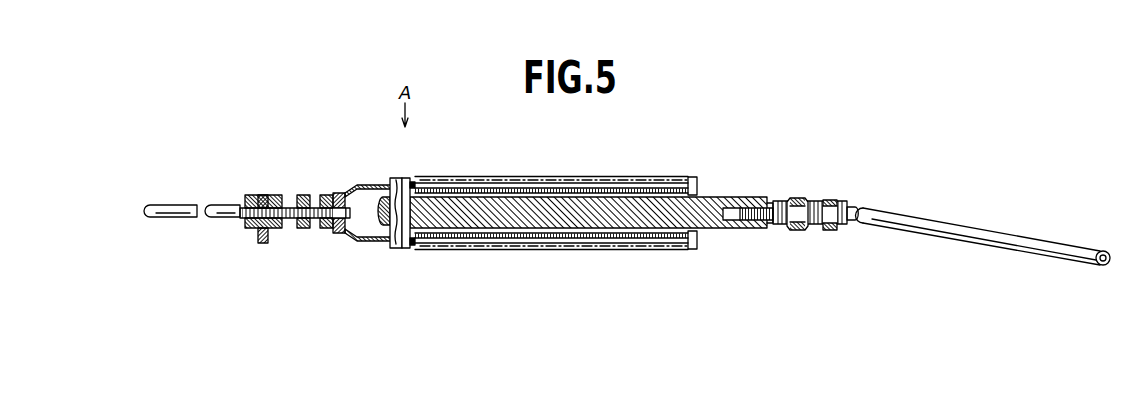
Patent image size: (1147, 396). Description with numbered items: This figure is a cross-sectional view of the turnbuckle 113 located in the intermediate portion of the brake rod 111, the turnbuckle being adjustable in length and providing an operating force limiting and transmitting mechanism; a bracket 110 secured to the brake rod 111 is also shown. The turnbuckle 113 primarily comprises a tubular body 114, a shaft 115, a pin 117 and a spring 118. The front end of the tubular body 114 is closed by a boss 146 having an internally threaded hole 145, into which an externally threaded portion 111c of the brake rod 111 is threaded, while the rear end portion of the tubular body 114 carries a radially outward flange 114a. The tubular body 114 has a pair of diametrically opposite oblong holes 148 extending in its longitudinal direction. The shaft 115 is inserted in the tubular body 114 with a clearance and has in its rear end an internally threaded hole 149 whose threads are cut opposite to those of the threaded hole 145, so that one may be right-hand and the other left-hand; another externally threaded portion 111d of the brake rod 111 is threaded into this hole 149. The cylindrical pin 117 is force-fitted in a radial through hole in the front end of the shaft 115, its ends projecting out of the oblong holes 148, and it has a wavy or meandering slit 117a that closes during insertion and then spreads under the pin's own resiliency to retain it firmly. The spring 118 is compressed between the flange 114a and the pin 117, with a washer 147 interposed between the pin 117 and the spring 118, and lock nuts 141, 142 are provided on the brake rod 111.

The bracket 110 is at (257, 238).
The brake rod 111 is at (222, 205).
The externally threaded portion 111c is at (287, 219).
The externally threaded portion 111d is at (802, 200).
The turnbuckle 113 is at (666, 128).
The tubular body 114 is at (368, 238).
The radially outward flange 114a is at (695, 183).
The shaft 115 is at (566, 222).
The pin 117 is at (395, 249).
The slit 117a is at (396, 178).
The spring 118 is at (522, 179).
The lock nut 141 is at (303, 195).
The lock nut 142 is at (829, 201).
The internally threaded hole 145 is at (336, 220).
The boss 146 is at (327, 196).
The washer 147 is at (412, 246).
The oblong holes 148 is at (457, 186).
The internally threaded hole 149 is at (760, 220).